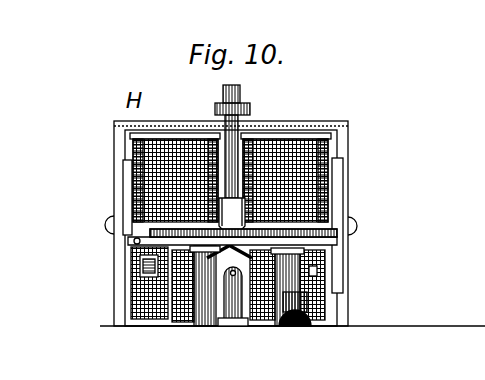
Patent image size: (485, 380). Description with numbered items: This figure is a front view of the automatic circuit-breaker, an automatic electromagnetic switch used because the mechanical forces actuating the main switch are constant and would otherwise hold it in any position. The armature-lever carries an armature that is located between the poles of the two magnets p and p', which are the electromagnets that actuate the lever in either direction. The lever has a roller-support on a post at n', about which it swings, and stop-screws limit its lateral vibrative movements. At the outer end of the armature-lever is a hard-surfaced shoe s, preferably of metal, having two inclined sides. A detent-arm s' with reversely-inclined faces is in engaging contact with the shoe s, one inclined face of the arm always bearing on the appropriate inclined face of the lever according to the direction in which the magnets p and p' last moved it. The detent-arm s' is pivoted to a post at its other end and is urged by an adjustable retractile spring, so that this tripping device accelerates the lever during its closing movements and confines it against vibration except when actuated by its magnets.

The magnet p is at (152, 177).
The magnet p' is at (311, 177).
The detent-arm s' is at (272, 209).
The hard-surfaced shoe s is at (185, 309).
The post n' is at (239, 316).